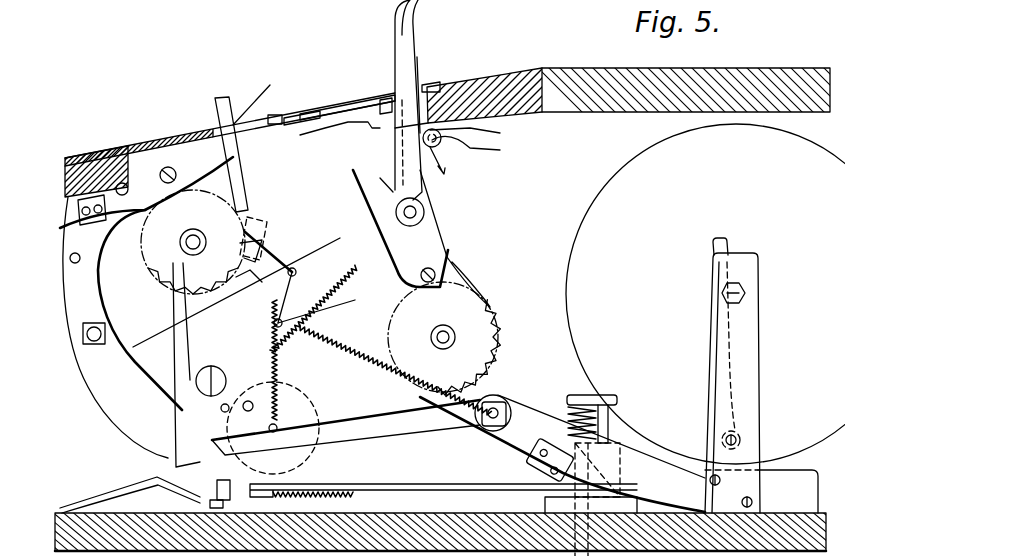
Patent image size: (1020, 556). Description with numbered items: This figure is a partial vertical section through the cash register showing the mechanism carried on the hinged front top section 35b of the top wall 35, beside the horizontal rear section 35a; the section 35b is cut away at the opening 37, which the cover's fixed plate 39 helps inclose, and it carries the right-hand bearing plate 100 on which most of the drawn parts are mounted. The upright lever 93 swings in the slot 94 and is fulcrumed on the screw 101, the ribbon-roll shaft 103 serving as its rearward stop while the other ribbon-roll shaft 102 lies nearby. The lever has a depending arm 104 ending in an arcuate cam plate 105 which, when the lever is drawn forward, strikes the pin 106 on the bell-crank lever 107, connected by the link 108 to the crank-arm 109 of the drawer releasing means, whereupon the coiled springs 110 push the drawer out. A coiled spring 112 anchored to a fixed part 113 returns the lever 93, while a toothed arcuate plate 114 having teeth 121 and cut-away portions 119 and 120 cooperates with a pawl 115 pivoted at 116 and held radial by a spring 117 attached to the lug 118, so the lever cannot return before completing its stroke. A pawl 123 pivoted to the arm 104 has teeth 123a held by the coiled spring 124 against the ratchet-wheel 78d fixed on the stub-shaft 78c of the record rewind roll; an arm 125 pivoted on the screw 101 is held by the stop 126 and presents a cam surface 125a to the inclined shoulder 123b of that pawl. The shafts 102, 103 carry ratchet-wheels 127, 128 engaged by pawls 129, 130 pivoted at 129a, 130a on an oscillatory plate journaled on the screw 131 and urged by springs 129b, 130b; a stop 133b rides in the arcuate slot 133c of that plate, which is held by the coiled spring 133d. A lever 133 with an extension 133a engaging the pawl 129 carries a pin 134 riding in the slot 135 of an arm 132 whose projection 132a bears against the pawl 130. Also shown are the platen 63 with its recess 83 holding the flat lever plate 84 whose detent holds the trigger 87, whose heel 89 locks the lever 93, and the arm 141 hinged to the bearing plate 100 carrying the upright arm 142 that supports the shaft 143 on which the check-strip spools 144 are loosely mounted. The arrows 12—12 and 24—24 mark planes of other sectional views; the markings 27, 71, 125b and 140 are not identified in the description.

The section line 12 is at (403, 38).
The section line 24 is at (278, 162).
The direction arrow 27 is at (300, 332).
The top wall 35 is at (510, 68).
The rear top section 35a is at (616, 67).
The front top section 35b is at (83, 165).
The opening 37 is at (458, 135).
The fixed plate 39 is at (98, 140).
The platen 63 is at (326, 105).
The spring 71 is at (300, 383).
The stub-shaft 78c is at (456, 337).
The ratchet-wheel 78d is at (490, 362).
The recess 83 is at (272, 114).
The lever plate 84 is at (297, 113).
The trigger 87 is at (343, 108).
The heel 89 is at (385, 98).
The upright lever 93 is at (393, 38).
The slot 94 is at (251, 95).
The bearing plate 100 is at (450, 270).
The fulcrum screw 101 is at (172, 385).
The ribbon-roll shaft 102 is at (180, 244).
The ribbon-roll shaft 103 is at (425, 212).
The arm 104 is at (165, 475).
The cam plate 105 is at (151, 500).
The pin 106 is at (220, 505).
The bell-crank lever 107 is at (280, 500).
The link 108 is at (443, 497).
The crank-arm 109 is at (642, 480).
The coiled springs 110 is at (148, 142).
The coiled spring 112 is at (488, 420).
The fixed part 113 is at (492, 435).
The toothed arcuate plate 114 is at (440, 250).
The pawl 115 is at (335, 320).
The pawl pivot 116 is at (365, 318).
The spring 117 is at (262, 300).
The lug 118 is at (298, 328).
The cut-away 119 is at (395, 213).
The cut-away 120 is at (210, 176).
The teeth 121 is at (193, 242).
The pawl 123 is at (398, 405).
The teeth 123a is at (420, 412).
The inclined shoulder 123b is at (280, 470).
The coiled spring 124 is at (300, 425).
The arm 125 is at (283, 395).
The cam surface 125a is at (280, 440).
The cam arm 125b is at (165, 452).
The stop pin 126 is at (178, 418).
The ratchet-wheel 127 is at (157, 297).
The ratchet-wheel 128 is at (425, 188).
The pawl 129 is at (225, 300).
The pawl pivot 129a is at (212, 332).
The spring 129b is at (395, 240).
The pawl 130 is at (340, 129).
The pawl pivot 130a is at (239, 235).
The spring 130b is at (490, 180).
The screw 131 is at (236, 245).
The arm 132 is at (227, 270).
The projection 132a is at (418, 88).
The lever 133 is at (222, 108).
The extension 133a is at (236, 292).
The stop pin 133b is at (420, 226).
The arcuate slot 133c is at (470, 188).
The coiled spring 133d is at (360, 370).
The pin 134 is at (175, 263).
The slot 135 is at (185, 278).
The base plate 140 is at (85, 510).
The arm 141 is at (535, 420).
The upright arm 142 is at (751, 389).
The shaft 143 is at (745, 293).
The spools 144 is at (559, 287).